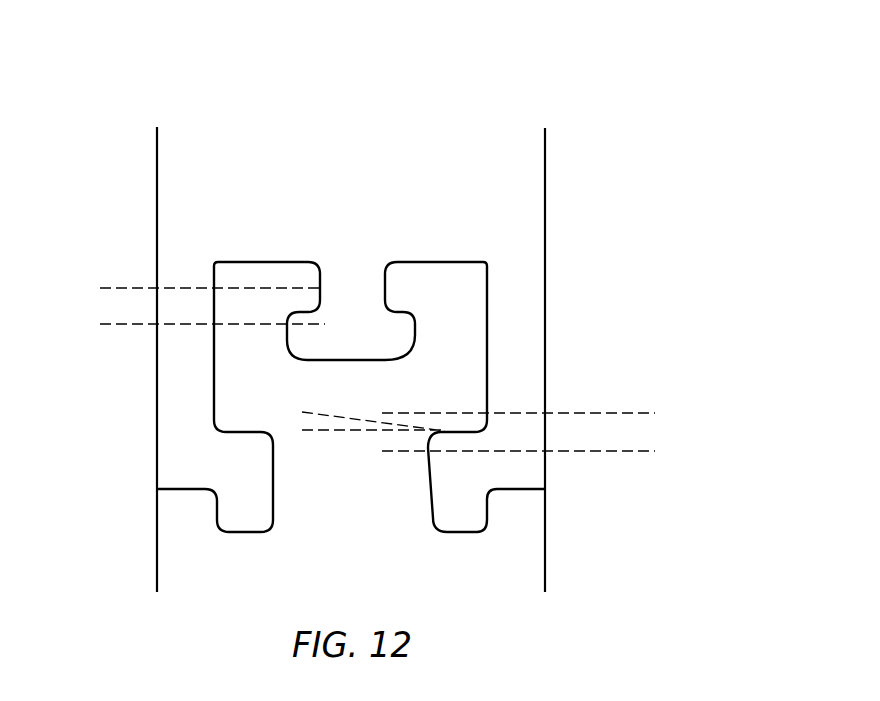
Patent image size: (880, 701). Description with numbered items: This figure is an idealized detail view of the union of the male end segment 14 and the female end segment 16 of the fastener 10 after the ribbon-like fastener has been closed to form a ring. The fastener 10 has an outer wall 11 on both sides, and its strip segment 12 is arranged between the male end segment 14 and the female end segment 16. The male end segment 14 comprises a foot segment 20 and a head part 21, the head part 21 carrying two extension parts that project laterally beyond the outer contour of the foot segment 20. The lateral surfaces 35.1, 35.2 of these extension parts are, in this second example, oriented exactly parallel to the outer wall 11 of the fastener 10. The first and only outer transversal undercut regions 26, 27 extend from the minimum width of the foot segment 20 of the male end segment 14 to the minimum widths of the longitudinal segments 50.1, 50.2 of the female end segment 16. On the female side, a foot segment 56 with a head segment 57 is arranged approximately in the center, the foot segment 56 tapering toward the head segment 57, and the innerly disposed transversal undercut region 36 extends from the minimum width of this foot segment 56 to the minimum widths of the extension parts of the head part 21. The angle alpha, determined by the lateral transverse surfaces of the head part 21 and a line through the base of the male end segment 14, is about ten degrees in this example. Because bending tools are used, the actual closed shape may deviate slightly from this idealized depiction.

The fastener 10 is at (395, 346).
The outer wall 11 is at (115, 359).
The strip segment 12 is at (178, 172).
The male end segment 14 is at (84, 541).
The female end segment 16 is at (342, 364).
The foot segment 20 is at (364, 508).
The head part 21 is at (460, 297).
The first outer undercut region 26 is at (516, 431).
The first outer transversal undercut region 27 is at (657, 413).
The lateral surface 35.1 is at (211, 368).
The lateral surface 35.2 is at (493, 330).
The innerly disposed transversal undercut region 36 is at (100, 288).
The longitudinal segment 50.1 is at (522, 386).
The longitudinal segment 50.2 is at (177, 340).
The foot segment 56 is at (364, 303).
The head segment 57 is at (311, 343).